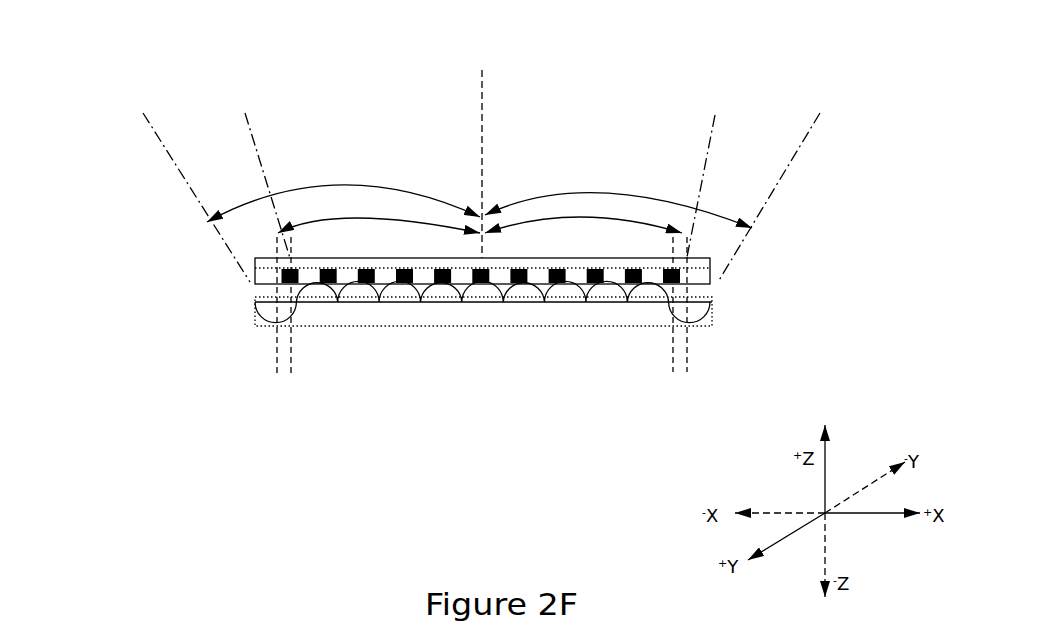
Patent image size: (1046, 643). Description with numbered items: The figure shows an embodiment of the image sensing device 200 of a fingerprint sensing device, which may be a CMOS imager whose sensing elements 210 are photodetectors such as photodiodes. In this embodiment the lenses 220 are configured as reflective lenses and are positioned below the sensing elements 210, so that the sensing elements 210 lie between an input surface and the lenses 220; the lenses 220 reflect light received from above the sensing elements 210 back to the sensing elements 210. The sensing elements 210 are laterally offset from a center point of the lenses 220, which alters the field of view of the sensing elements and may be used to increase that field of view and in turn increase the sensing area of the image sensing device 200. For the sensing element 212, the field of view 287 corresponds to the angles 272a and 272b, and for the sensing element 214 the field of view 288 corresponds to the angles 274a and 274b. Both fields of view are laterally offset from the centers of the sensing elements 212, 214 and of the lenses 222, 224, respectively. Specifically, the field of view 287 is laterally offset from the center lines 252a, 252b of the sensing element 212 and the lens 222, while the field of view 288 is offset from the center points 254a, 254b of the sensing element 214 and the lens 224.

The image sensing device 200 is at (148, 58).
The sensing elements 210 is at (254, 270).
The sensing element 212 is at (664, 278).
The sensing element 214 is at (291, 279).
The lenses 220 is at (715, 312).
The lens 222 is at (697, 312).
The lens 224 is at (270, 313).
The center line 252a is at (670, 368).
The center line 252b is at (685, 374).
The center point 254a is at (292, 375).
The center point 254b is at (273, 357).
The angle 272a is at (575, 197).
The angle 272b is at (580, 218).
The angle 274a is at (370, 187).
The angle 274b is at (393, 223).
The field of view 287 is at (762, 193).
The field of view 288 is at (195, 185).